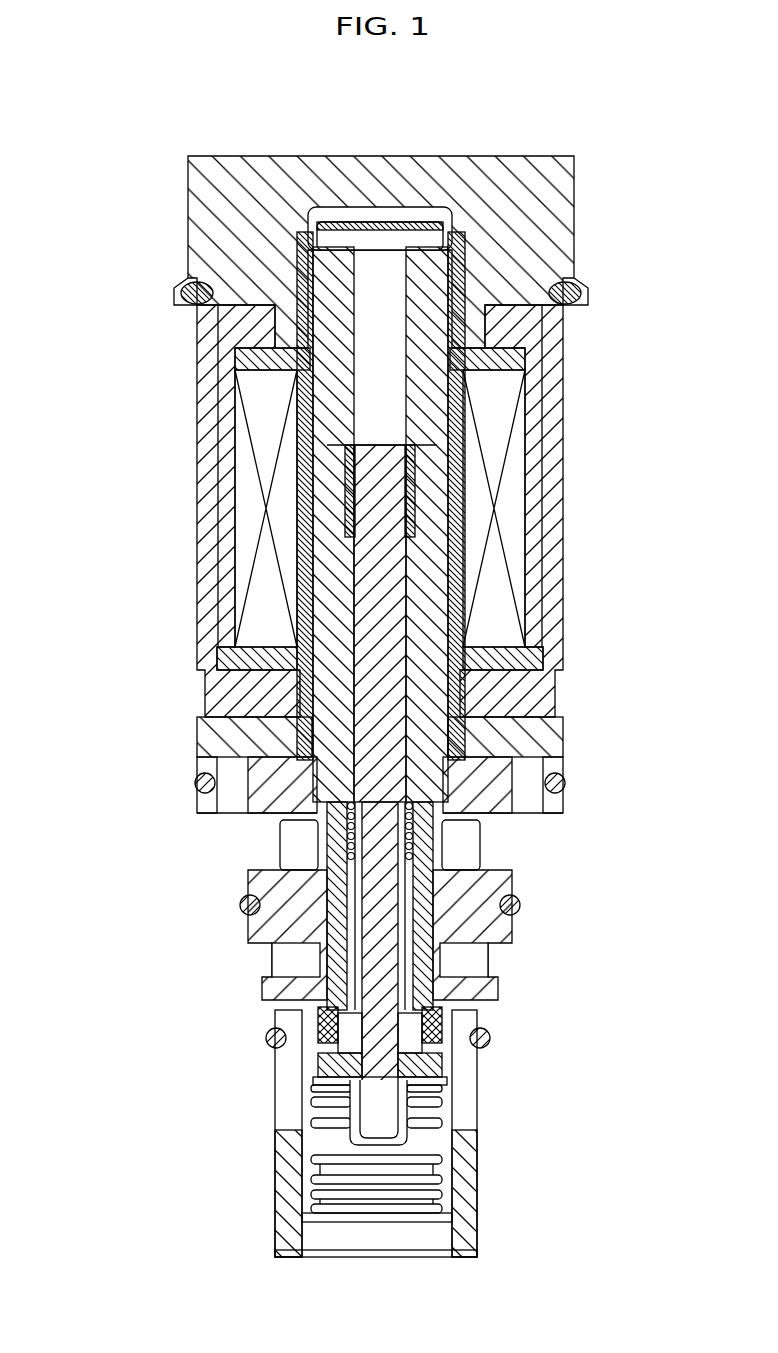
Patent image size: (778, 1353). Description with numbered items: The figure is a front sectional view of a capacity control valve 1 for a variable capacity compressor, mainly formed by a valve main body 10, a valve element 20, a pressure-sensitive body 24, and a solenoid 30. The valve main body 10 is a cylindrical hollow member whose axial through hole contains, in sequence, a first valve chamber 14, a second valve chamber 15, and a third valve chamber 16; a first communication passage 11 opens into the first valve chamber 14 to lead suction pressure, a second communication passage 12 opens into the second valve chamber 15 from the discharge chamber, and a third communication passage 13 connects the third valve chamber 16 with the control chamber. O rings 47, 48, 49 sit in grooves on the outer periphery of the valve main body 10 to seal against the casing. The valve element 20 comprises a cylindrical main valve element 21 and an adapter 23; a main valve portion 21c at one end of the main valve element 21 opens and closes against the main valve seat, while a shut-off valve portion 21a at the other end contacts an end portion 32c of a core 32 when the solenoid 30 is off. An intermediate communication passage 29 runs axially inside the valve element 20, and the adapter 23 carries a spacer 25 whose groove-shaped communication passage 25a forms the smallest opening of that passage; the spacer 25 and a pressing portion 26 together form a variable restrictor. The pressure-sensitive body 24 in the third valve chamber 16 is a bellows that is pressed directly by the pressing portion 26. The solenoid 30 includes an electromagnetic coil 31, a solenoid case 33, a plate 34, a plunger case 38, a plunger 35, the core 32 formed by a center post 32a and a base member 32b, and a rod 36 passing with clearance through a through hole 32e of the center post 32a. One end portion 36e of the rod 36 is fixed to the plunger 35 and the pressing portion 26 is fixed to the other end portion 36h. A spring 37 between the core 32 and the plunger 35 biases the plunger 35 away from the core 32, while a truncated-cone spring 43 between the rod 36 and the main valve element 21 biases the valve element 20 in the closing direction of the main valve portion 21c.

The capacity control valve 1 is at (118, 141).
The valve main body 10 is at (141, 1160).
The first communication passage 11 is at (300, 828).
The second communication passage 12 is at (320, 940).
The third communication passage 13 is at (290, 1100).
The first valve chamber 14 is at (330, 858).
The second valve chamber 15 is at (295, 970).
The third valve chamber 16 is at (290, 1135).
The valve element 20 is at (625, 965).
The main valve element 21 is at (490, 990).
The shut-off valve portion 21a is at (420, 862).
The main valve portion 21c is at (425, 1000).
The adapter 23 is at (470, 1045).
The pressure-sensitive body 24 is at (450, 1140).
The spacer 25 is at (430, 1040).
The communication passage 25a is at (320, 1068).
The pressing portion 26 is at (400, 1087).
The intermediate communication passage 29 is at (405, 920).
The solenoid 30 is at (176, 367).
The electromagnetic coil 31 is at (258, 592).
The core 32 is at (97, 680).
The center post 32a is at (330, 705).
The base member 32b is at (310, 750).
The end portion 32c is at (445, 825).
The through hole 32e is at (400, 590).
The solenoid case 33 is at (200, 548).
The plate 34 is at (325, 340).
The plunger 35 is at (330, 400).
The rod 36 is at (345, 452).
The one end portion 36e is at (415, 450).
The other end portion 36h is at (375, 1090).
The spring 37 is at (340, 530).
The plunger case 38 is at (300, 245).
The spring 43 is at (520, 906).
The O ring 47 is at (200, 785).
The O ring 48 is at (245, 906).
The O ring 49 is at (268, 1040).